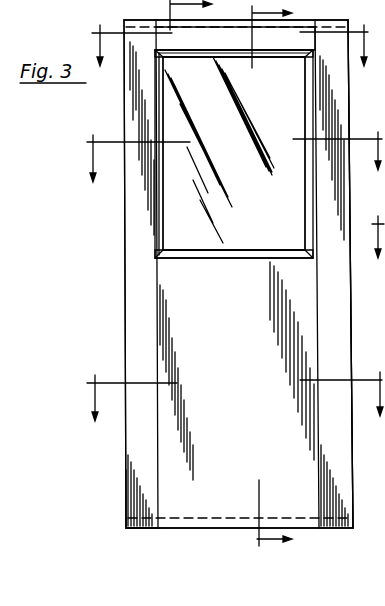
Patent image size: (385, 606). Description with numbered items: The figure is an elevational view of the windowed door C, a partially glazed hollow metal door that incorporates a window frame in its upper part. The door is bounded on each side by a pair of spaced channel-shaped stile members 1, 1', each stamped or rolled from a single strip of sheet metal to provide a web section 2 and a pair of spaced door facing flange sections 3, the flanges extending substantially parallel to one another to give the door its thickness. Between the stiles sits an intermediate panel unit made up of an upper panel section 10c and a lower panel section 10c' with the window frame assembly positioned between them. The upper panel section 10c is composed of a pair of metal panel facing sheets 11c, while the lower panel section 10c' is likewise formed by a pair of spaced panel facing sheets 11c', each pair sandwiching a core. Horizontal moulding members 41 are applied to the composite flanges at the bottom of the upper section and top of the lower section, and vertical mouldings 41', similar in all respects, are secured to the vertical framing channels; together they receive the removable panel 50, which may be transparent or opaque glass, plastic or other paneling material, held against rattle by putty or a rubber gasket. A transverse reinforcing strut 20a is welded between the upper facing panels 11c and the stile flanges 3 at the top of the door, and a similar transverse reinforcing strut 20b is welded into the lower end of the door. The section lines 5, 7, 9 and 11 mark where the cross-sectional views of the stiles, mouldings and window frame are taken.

The stile member 1 is at (227, 274).
The stile member 1' is at (361, 274).
The web section 2 is at (124, 319).
The door facing flange section 3 is at (238, 274).
The transverse reinforcing strut 20a is at (296, 25).
The transverse reinforcing strut 20b is at (181, 530).
The panel facing sheet 11c is at (235, 38).
The panel facing sheet 11c' is at (238, 388).
The upper panel section 10c is at (234, 66).
The lower panel section 10c' is at (234, 250).
The horizontal moulding member 41 is at (234, 154).
The vertical moulding 41' is at (237, 153).
The removable panel 50 is at (219, 150).
The windowed door C is at (128, 474).
The outwardly rebent portion 5 is at (184, 15).
The section line 7 is at (235, 216).
The section line 9 is at (264, 277).
The section line 11 is at (236, 188).